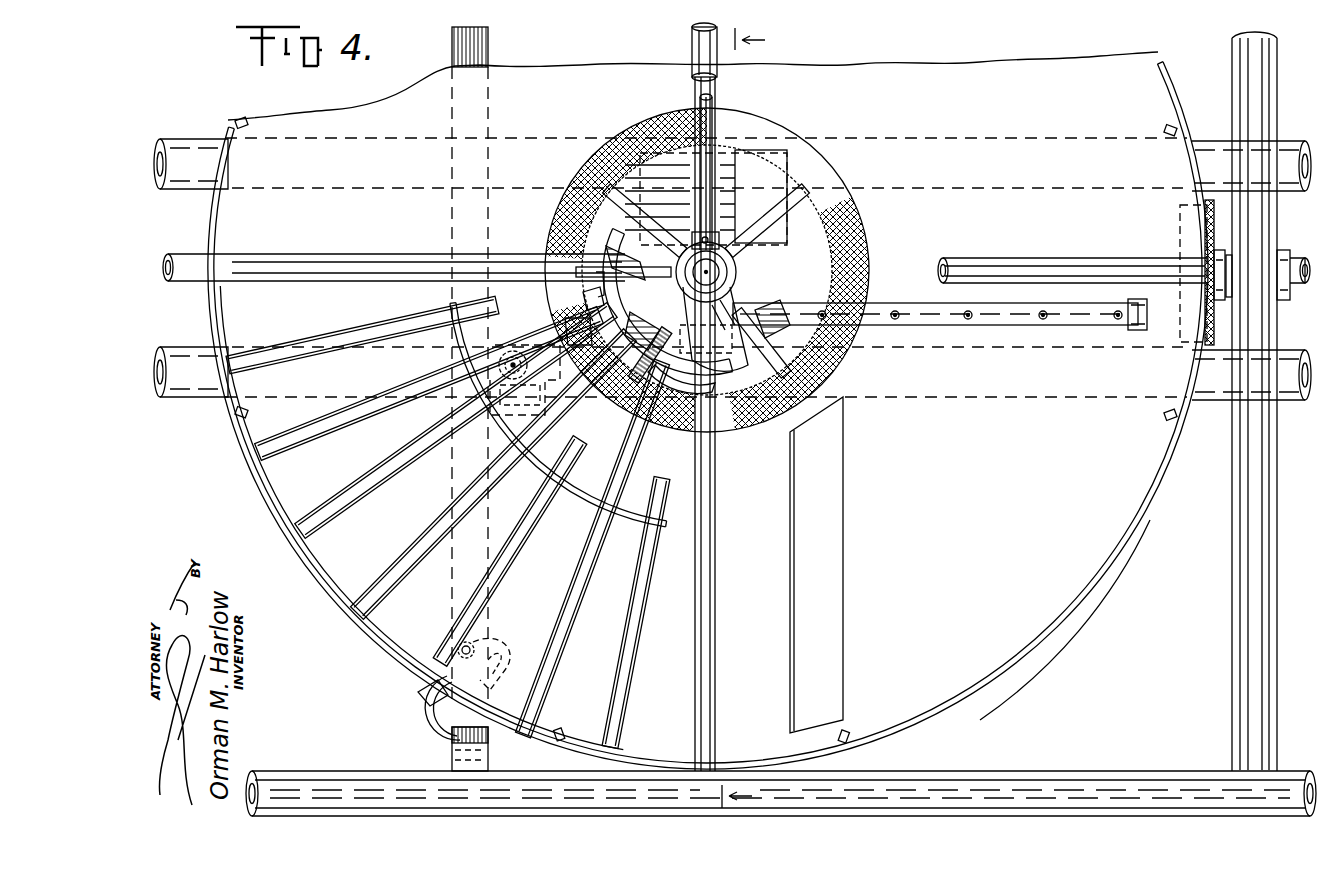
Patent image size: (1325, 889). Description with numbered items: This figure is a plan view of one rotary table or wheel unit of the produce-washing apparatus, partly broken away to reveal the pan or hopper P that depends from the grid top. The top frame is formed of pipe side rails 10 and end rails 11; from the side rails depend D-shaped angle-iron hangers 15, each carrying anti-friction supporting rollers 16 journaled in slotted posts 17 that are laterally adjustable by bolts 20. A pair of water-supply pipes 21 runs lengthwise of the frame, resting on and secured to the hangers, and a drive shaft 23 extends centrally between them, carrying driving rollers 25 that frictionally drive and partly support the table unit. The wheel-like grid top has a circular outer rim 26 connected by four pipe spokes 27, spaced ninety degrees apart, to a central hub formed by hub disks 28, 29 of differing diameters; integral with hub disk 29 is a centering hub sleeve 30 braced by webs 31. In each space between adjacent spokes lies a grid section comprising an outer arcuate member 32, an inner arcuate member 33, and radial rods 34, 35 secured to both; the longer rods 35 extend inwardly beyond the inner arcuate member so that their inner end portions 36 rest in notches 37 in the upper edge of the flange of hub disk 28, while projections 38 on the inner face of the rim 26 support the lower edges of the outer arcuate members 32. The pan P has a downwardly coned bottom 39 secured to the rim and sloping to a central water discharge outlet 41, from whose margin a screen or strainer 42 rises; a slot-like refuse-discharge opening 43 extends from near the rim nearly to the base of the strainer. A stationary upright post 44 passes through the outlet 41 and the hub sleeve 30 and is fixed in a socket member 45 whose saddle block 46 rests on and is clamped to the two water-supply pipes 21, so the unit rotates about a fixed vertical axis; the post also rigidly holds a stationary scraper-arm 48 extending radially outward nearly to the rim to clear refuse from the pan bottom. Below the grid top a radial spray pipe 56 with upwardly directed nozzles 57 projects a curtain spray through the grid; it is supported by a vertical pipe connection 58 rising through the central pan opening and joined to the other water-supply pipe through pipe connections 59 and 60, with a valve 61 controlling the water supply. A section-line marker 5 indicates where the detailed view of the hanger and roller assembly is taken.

The side rails 10 is at (1040, 778).
The end rails 11 is at (1252, 565).
The hanger 15 is at (488, 42).
The anti-friction supporting roller 16 is at (418, 693).
The slotted post 17 is at (437, 712).
The bolts 20 is at (485, 640).
The water-supply pipes 21 is at (176, 155).
The drive shaft 23 is at (180, 262).
The driving rollers 25 is at (1200, 216).
The outer rim 26 is at (1130, 540).
The radial bars or spokes 27 is at (325, 265).
The hub disk 28 is at (585, 295).
The hub disk 29 is at (725, 306).
The centering hub sleeve 30 is at (690, 266).
The webs 31 is at (694, 302).
The outer arcuate member 32 is at (343, 595).
The inner arcuate member 33 is at (575, 498).
The radial rods 34 is at (393, 332).
The radial rods 35 is at (362, 405).
The inner end portions 36 is at (640, 414).
The notches 37 is at (596, 238).
The projections 38 is at (248, 123).
The downwardly coned bottom 39 is at (1005, 72).
The central water discharge outlet 41 is at (707, 270).
The screen or strainer 42 is at (592, 166).
The refuse-discharge opening 43 is at (830, 585).
The upright post or stub shaft 44 is at (710, 266).
The socket member 45 is at (735, 270).
The saddle block 46 is at (775, 243).
The stationary scraper-arm 48 is at (710, 122).
The radial pipe 56 is at (884, 303).
The spray openings or nozzles 57 is at (1046, 314).
The vertical pipe connection 58 is at (563, 316).
The pipe connection 59 is at (513, 356).
The pipe connection 60 is at (530, 408).
The valve 61 is at (495, 440).
The section line 5 is at (752, 420).
The pan or hopper P is at (1050, 638).